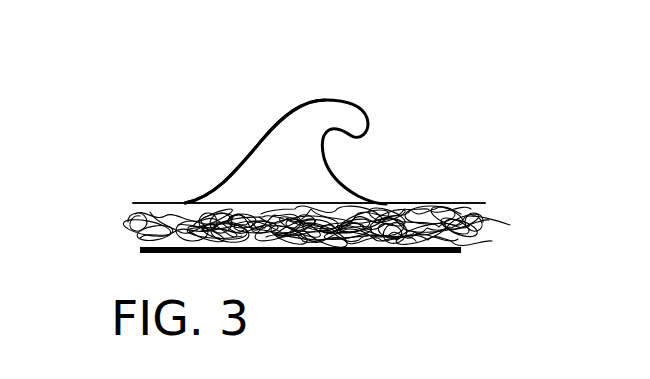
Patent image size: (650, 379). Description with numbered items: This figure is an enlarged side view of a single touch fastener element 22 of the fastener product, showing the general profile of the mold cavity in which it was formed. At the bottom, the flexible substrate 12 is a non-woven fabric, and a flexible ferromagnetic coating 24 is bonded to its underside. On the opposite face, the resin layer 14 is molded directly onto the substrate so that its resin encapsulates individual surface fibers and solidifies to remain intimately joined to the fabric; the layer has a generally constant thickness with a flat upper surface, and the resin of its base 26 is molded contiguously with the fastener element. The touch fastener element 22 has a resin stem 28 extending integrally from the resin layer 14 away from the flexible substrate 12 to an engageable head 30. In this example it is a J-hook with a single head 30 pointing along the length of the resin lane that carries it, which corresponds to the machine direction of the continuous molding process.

The flexible substrate 12 is at (125, 220).
The resin layer 14 is at (455, 204).
The touch fastener element 22 is at (243, 110).
The ferromagnetic coating 24 is at (433, 258).
The base 26 is at (407, 203).
The resin stem 28 is at (230, 180).
The engageable head 30 is at (333, 98).